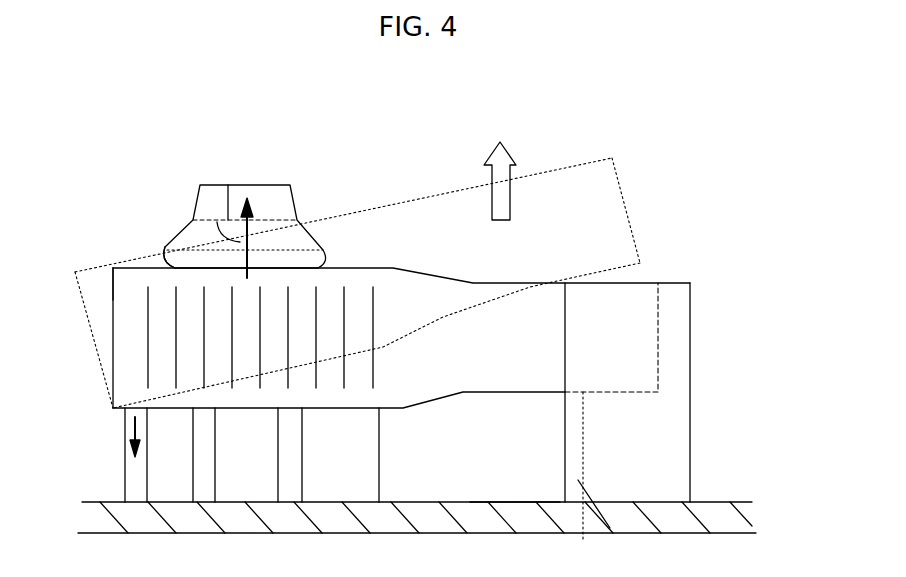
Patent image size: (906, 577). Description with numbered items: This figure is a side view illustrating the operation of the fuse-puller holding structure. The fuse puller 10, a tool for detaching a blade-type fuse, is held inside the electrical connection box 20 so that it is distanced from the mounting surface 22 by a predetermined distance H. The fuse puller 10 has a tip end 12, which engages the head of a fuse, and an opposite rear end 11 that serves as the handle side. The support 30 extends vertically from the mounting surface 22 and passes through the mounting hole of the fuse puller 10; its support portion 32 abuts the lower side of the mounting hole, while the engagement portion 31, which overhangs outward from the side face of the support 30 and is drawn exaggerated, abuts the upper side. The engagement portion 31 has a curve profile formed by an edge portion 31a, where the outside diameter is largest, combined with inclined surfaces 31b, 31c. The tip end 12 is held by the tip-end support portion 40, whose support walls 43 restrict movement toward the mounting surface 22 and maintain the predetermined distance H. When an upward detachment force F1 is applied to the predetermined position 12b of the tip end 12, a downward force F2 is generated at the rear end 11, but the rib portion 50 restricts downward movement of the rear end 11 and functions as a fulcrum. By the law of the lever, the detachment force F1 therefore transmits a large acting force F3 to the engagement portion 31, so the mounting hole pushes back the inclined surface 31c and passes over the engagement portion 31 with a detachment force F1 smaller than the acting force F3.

The fuse puller 10 is at (393, 267).
The rear end 11 is at (127, 264).
The tip end 12 is at (540, 283).
The predetermined position 12b is at (487, 393).
The electrical connection box 20 is at (713, 500).
The mounting surface 22 is at (520, 499).
The support 30 is at (277, 184).
The engagement portion 31 is at (300, 224).
The edge portion 31a is at (330, 260).
The inclined surface 31b is at (193, 219).
The inclined surface 31c is at (160, 264).
The support portion 32 is at (193, 473).
The tip-end support portion 40 is at (691, 337).
The support walls 43 is at (591, 476).
The rib portion 50 is at (118, 473).
The detachment force F1 is at (516, 180).
The downward force F2 is at (128, 433).
The acting force F3 is at (230, 193).
The predetermined distance H is at (392, 456).